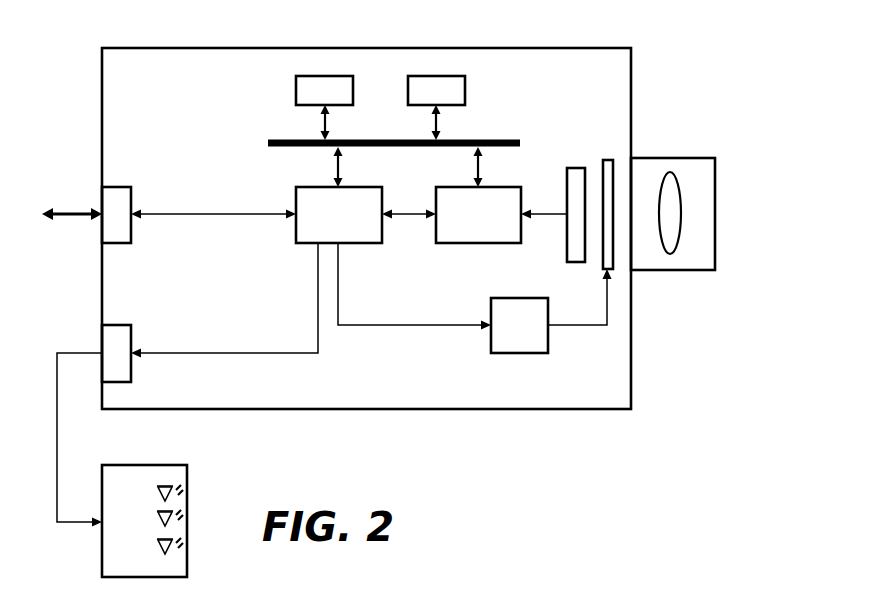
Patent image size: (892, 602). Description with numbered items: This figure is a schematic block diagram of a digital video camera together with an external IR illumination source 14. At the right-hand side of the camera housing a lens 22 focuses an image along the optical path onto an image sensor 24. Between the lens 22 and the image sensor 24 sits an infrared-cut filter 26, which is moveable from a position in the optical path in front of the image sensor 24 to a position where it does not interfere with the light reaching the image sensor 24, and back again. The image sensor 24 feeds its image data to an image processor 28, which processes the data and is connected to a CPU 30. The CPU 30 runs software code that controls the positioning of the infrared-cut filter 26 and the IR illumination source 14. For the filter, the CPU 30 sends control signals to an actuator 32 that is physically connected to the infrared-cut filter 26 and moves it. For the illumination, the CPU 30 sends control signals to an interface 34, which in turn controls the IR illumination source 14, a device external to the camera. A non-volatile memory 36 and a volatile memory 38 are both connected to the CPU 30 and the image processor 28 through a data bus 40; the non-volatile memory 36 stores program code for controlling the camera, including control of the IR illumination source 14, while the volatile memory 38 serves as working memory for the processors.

The IR illumination source 14 is at (148, 477).
The lens 22 is at (700, 232).
The image sensor 24 is at (575, 165).
The infrared-cut filter 26 is at (603, 158).
The image processor 28 is at (490, 240).
The CPU 30 is at (315, 238).
The actuator 32 is at (497, 349).
The interface 34 is at (108, 340).
The non-volatile memory 36 is at (312, 82).
The volatile memory 38 is at (425, 84).
The data bus 40 is at (292, 150).